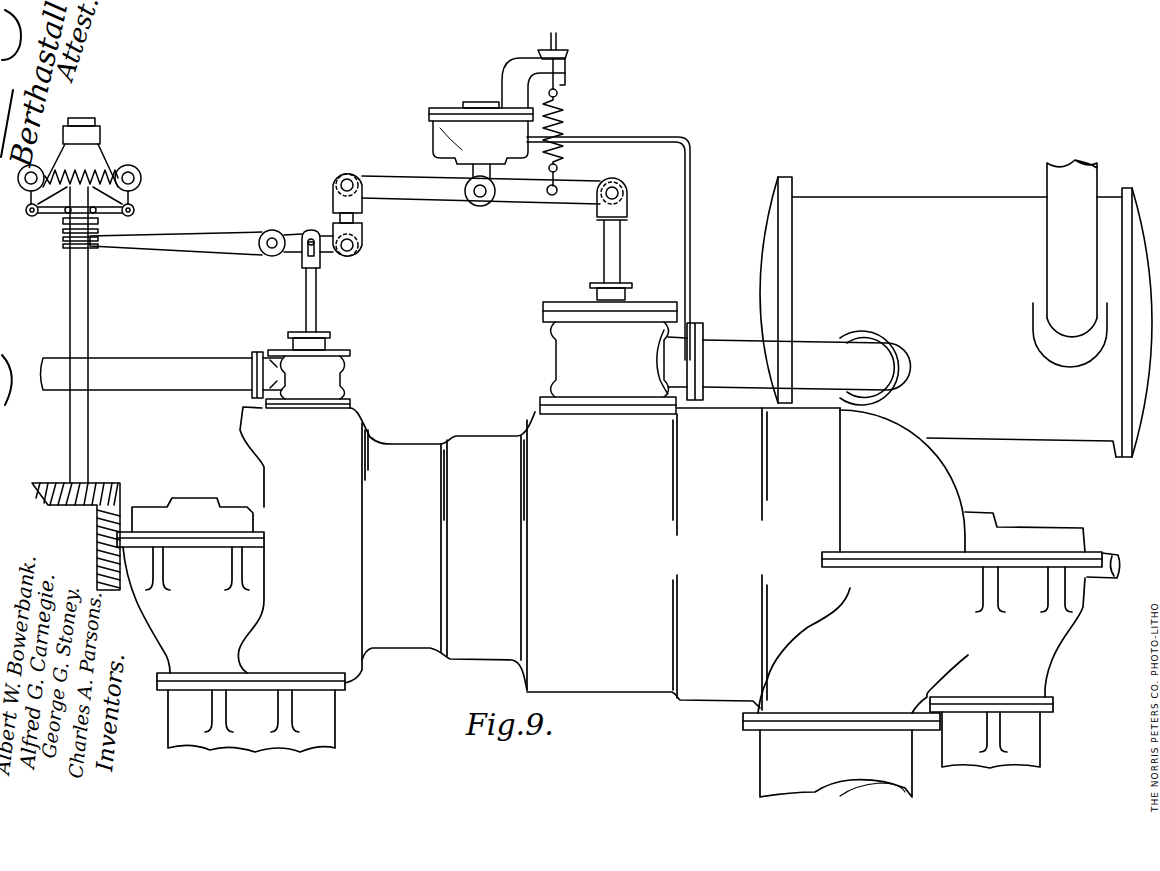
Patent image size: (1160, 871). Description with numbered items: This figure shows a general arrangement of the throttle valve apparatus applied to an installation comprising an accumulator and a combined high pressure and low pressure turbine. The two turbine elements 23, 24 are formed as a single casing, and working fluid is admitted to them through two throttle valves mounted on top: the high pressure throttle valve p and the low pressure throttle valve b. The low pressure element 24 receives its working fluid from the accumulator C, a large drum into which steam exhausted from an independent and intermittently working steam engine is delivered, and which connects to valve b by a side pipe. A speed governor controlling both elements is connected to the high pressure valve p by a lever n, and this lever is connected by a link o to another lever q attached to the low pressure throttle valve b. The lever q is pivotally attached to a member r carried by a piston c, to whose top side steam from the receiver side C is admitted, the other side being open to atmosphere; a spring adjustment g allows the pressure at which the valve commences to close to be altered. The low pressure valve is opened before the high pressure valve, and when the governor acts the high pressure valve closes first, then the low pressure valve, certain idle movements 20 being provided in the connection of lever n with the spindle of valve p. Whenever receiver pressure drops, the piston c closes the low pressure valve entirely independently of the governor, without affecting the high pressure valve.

The lever n is at (230, 235).
The idle movements 20 is at (305, 230).
The link o is at (358, 216).
The lever q is at (438, 192).
The member r is at (493, 170).
The piston c is at (450, 138).
The spring adjustment g is at (558, 139).
The accumulator C is at (848, 200).
The high pressure throttle valve p is at (333, 380).
The low pressure throttle valve b is at (560, 373).
The turbine element 23 is at (418, 630).
The low pressure turbine element 24 is at (693, 678).